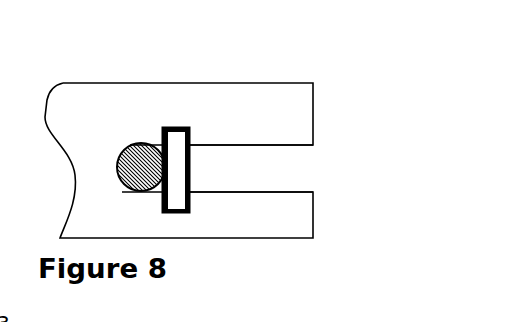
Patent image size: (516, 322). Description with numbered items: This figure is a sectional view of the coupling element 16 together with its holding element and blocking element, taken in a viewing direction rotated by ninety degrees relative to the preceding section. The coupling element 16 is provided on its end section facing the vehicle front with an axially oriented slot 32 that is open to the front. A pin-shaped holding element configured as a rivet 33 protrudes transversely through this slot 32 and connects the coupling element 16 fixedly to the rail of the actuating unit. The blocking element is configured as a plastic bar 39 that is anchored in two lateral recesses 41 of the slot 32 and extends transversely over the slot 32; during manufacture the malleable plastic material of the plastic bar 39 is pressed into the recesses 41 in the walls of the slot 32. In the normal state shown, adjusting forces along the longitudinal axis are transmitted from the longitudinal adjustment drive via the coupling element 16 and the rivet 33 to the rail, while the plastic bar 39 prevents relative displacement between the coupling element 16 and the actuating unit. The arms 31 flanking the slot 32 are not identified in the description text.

The coupling element 16 is at (82, 108).
The arm 31 is at (280, 100).
The slot 32 is at (243, 168).
The rivet 33 is at (135, 160).
The plastic bar 39 is at (175, 143).
The recesses 41 is at (190, 132).